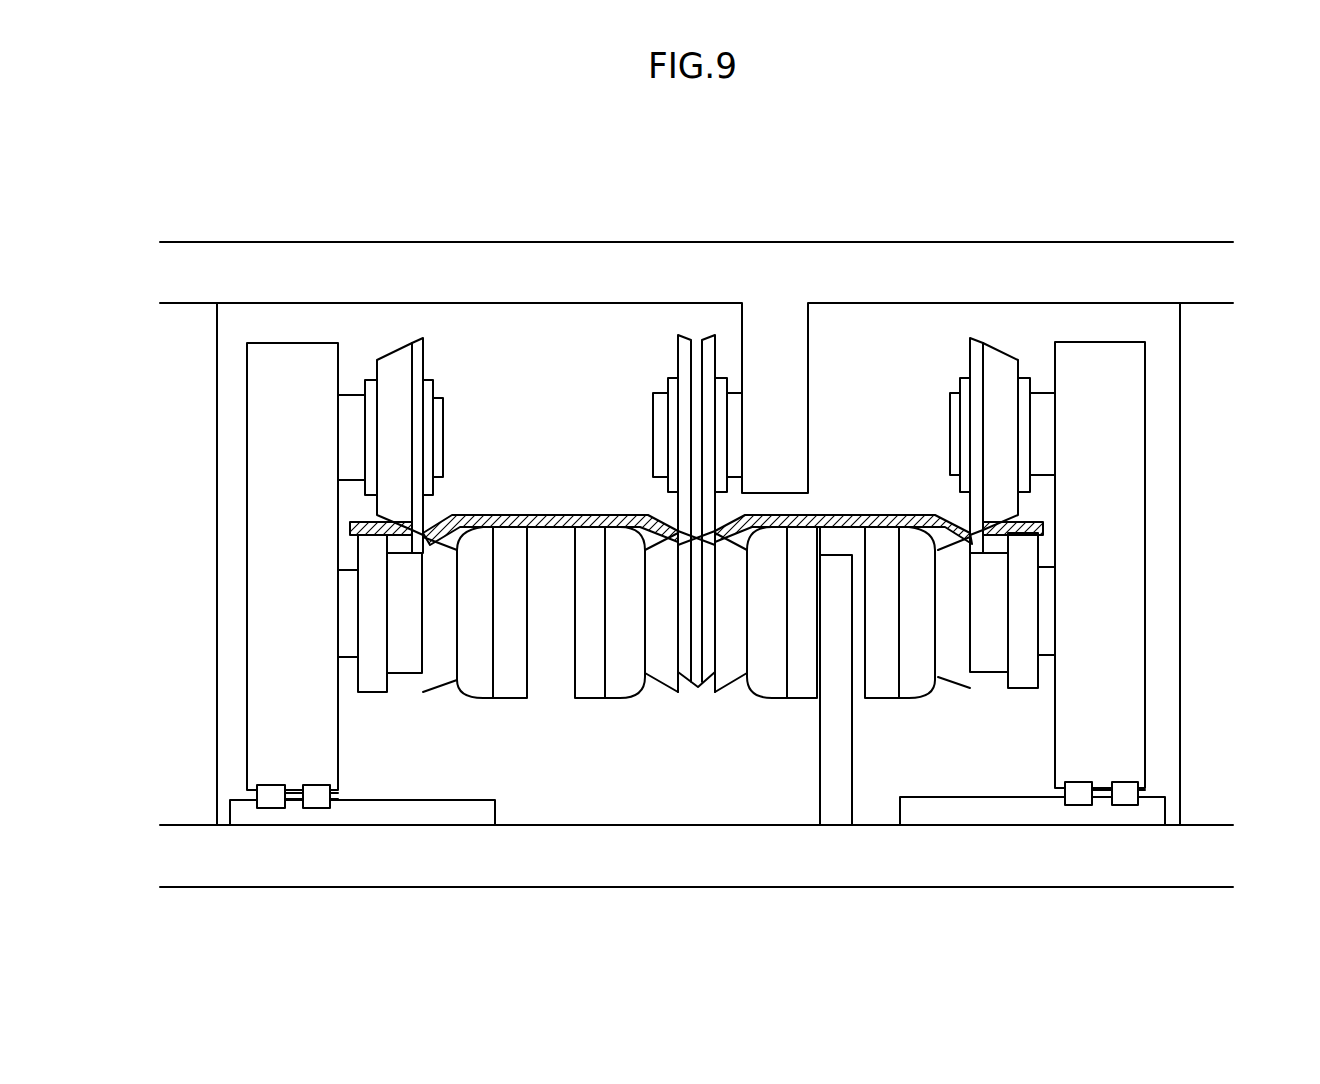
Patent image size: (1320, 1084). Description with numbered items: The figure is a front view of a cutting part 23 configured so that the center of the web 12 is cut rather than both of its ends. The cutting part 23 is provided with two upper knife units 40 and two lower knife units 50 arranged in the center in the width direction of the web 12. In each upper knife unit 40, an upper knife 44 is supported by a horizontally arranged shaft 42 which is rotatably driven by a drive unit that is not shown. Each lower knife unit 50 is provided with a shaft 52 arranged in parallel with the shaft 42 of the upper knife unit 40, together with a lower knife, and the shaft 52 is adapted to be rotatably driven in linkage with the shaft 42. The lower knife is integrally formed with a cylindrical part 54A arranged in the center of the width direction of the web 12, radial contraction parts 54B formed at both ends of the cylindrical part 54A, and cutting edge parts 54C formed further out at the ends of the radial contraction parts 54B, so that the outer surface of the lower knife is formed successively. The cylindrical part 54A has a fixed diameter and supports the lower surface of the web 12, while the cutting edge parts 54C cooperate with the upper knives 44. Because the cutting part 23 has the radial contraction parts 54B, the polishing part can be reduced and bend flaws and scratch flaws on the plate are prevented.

The cutting part 23 is at (566, 192).
The upper knife unit 40 is at (685, 319).
The upper knife 44 is at (417, 345).
The shaft 42 is at (350, 433).
The web 12 is at (528, 502).
The shaft 52 is at (350, 612).
The lower knife unit 50 is at (346, 703).
The cylindrical part 54A is at (763, 678).
The radial contraction part 54B is at (470, 680).
The cutting edge part 54C is at (447, 668).